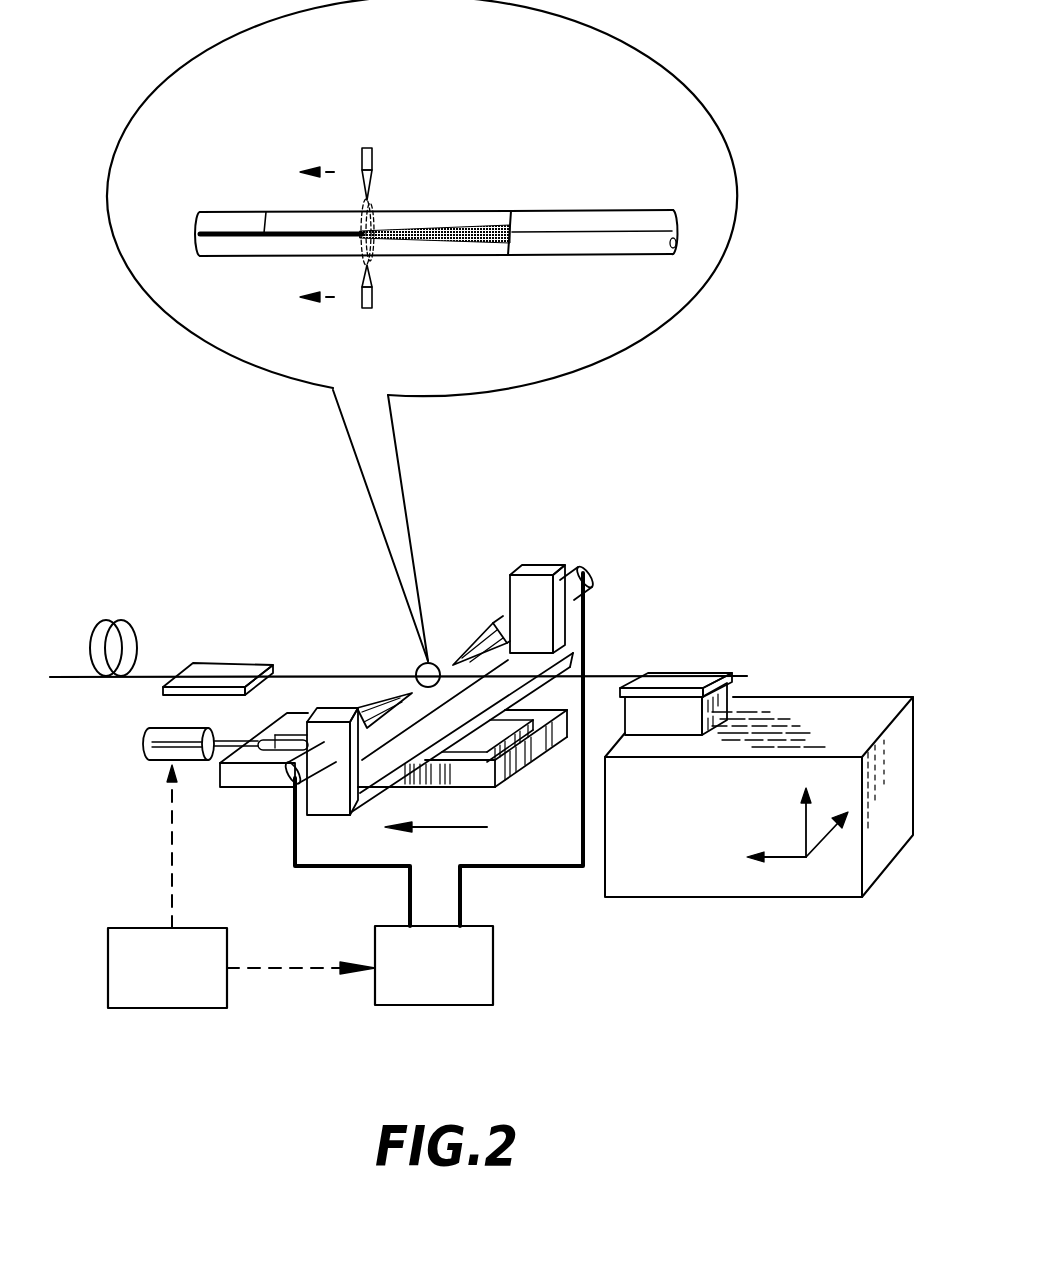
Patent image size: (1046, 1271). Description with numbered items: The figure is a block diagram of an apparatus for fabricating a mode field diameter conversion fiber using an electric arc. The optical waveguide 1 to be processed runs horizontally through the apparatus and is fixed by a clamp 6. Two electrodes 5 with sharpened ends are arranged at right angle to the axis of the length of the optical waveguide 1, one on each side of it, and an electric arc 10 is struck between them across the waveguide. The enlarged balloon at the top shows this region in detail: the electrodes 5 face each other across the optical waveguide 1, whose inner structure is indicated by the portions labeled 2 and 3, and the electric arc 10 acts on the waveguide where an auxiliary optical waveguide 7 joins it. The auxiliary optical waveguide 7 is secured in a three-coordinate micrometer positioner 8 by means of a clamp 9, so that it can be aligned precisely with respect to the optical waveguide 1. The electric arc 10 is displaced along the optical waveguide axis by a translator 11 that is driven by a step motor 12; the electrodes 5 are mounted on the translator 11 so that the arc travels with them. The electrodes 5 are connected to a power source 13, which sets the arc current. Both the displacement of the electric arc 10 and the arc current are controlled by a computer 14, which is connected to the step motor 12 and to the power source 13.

The optical waveguide 1 is at (205, 212).
The fiber coating 2 is at (234, 224).
The coating boundary / stripped section start 3 is at (265, 228).
The electrodes 5 is at (370, 174).
The clamp 6 is at (232, 671).
The auxiliary optical waveguide 7 is at (628, 209).
The three-coordinate micrometer positioner 8 is at (822, 706).
The clamp 9 is at (688, 668).
The electric arc 10 is at (372, 206).
The translator 11 is at (256, 773).
The step motor 12 is at (157, 733).
The power source 13 is at (434, 965).
The computer 14 is at (241, 886).